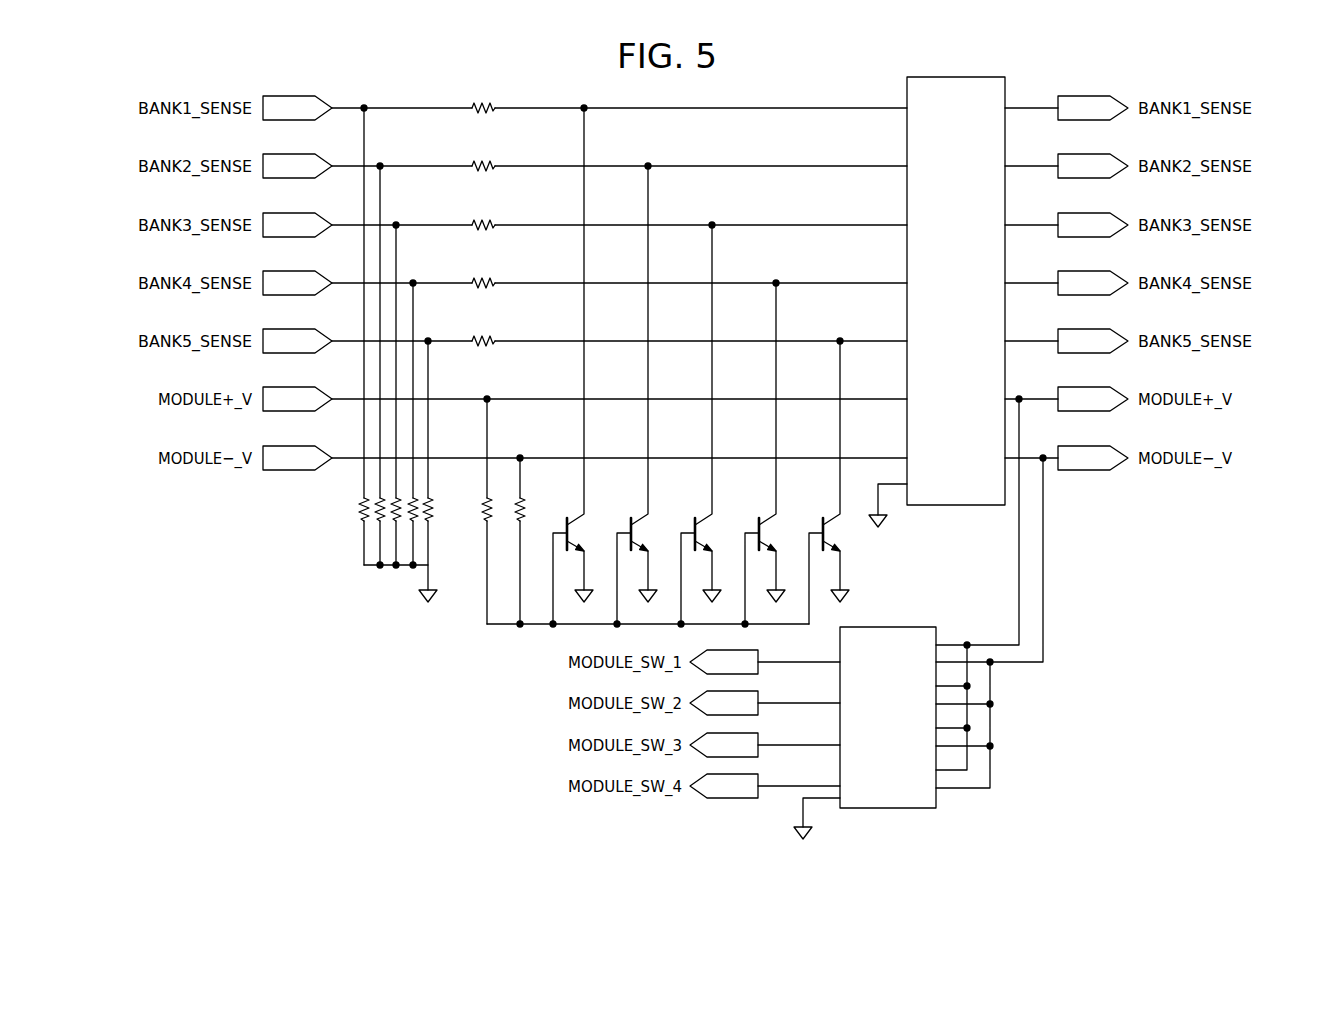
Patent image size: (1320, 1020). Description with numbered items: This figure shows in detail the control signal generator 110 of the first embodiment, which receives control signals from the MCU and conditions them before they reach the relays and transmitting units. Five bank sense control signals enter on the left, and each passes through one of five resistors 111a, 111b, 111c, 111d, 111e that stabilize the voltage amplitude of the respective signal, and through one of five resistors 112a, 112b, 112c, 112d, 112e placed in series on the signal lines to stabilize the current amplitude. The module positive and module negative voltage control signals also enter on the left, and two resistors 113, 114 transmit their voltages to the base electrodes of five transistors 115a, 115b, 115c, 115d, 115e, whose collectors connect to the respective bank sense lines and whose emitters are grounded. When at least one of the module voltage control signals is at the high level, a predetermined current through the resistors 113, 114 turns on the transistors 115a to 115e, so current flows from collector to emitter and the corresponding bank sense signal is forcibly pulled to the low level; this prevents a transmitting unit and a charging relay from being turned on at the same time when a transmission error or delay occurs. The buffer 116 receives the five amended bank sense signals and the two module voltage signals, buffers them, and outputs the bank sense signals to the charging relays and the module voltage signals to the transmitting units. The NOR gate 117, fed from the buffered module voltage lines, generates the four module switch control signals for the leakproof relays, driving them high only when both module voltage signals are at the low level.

The control signal generator 110 is at (343, 709).
The resistor 111a is at (358, 507).
The resistor 111b is at (378, 520).
The resistor 111c is at (394, 522).
The resistor 111d is at (414, 522).
The resistor 111e is at (430, 503).
The resistor 112a is at (486, 98).
The resistor 112b is at (486, 156).
The resistor 112c is at (486, 215).
The resistor 112d is at (486, 273).
The resistor 112e is at (486, 331).
The resistor 113 is at (485, 506).
The resistor 114 is at (522, 512).
The transistor 115a is at (579, 529).
The transistor 115b is at (643, 529).
The transistor 115c is at (707, 529).
The transistor 115d is at (771, 529).
The transistor 115e is at (840, 537).
The buffer 116 is at (966, 77).
The NOR gate 117 is at (912, 627).